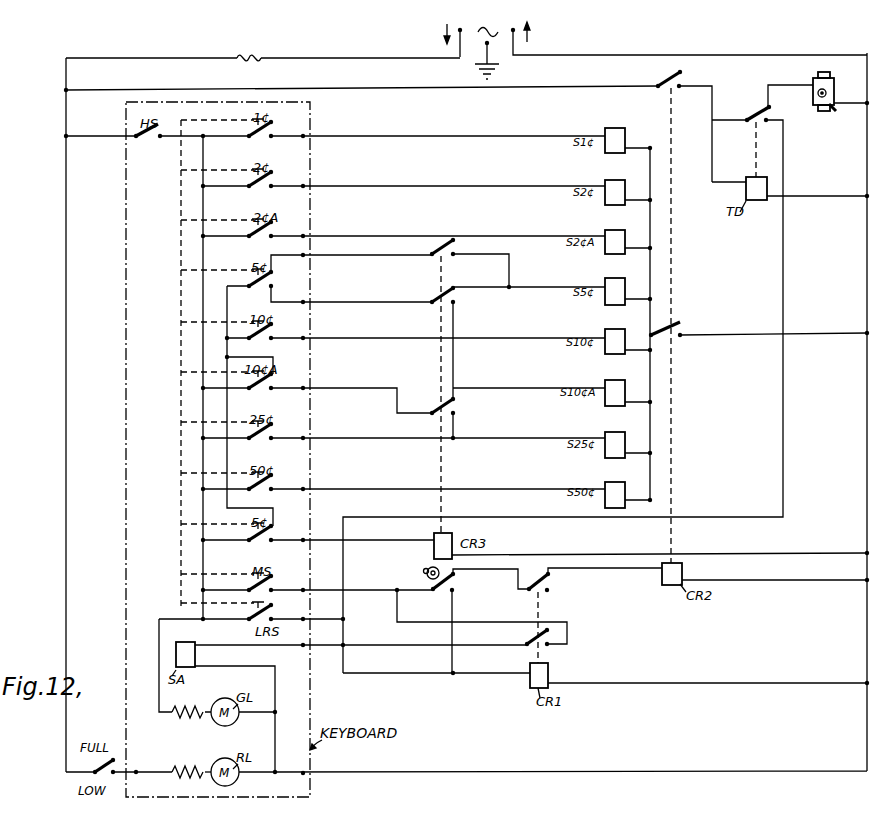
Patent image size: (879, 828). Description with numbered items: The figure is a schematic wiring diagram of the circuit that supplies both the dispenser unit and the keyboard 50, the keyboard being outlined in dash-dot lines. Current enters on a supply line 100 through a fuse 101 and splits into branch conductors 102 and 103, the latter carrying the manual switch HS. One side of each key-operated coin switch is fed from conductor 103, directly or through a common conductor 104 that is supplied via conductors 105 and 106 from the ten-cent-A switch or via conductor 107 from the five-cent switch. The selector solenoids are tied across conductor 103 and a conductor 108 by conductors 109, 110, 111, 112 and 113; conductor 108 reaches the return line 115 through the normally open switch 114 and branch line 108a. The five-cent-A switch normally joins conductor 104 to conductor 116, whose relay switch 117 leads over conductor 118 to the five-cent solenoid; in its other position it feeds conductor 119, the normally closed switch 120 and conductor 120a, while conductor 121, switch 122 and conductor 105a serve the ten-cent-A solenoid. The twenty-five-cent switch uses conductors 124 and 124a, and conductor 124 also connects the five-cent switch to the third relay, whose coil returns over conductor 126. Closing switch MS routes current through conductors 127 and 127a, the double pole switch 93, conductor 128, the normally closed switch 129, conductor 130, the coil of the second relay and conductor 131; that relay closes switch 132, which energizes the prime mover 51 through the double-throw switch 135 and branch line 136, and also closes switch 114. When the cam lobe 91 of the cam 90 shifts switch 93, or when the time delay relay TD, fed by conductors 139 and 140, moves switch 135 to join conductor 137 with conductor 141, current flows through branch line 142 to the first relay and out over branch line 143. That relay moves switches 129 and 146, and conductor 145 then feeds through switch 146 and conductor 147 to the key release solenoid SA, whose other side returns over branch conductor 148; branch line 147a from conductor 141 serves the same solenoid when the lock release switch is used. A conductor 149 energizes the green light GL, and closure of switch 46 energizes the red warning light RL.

The switch 46 is at (119, 761).
The keyboard 50 is at (126, 548).
The prime mover 51 is at (835, 93).
The cam 90 is at (427, 574).
The cam lobe 91 is at (426, 568).
The double pole switch 93 is at (458, 583).
The supply line 100 is at (354, 58).
The fuse 101 is at (252, 60).
The branch conductor 102 is at (118, 90).
The branch conductor 103 is at (112, 136).
The common conductor 104 is at (228, 305).
The conductor 105 is at (203, 390).
The conductor 105a is at (375, 388).
The branch line 106 is at (238, 357).
The conductor 107 is at (203, 542).
The conductor 108 is at (652, 237).
The branch line 108a is at (758, 334).
The conductor 109 is at (410, 137).
The conductor 110 is at (410, 187).
The conductor 111 is at (403, 237).
The conductor 112 is at (554, 338).
The conductor 113 is at (398, 489).
The normally open switch 114 is at (676, 328).
The return line conductor 115 is at (732, 54).
The conductor 116 is at (355, 256).
The relay operated switch 117 is at (438, 248).
The conductor 118 is at (510, 266).
The conductor 119 is at (362, 303).
The relay operated switch 120 is at (436, 300).
The conductor 120a is at (502, 287).
The conductor 121 is at (453, 322).
The relay operated dual position switch 122 is at (436, 411).
The conductor 124 is at (203, 440).
The conductor 124a is at (374, 438).
The conductor 126 is at (724, 555).
The conductor 127 is at (203, 592).
The conductor 127a is at (388, 590).
The conductor 128 is at (489, 572).
The relay operated switch 129 is at (551, 590).
The conductor 130 is at (638, 570).
The conductor 131 is at (826, 584).
The switch 132 is at (668, 76).
The double-throw switch 135 is at (766, 112).
The branch line 136 is at (800, 85).
The conductor 137 is at (714, 122).
The conductor 139 is at (714, 176).
The conductor 140 is at (848, 197).
The conductor 141 is at (784, 310).
The branch line 142 is at (495, 674).
The branch line 143 is at (700, 684).
The conductor 145 is at (440, 623).
The relay operated switch 146 is at (530, 641).
The conductor 147 is at (396, 645).
The branch line 147a is at (290, 647).
The branch conductor 148 is at (276, 700).
The conductor 149 is at (168, 712).